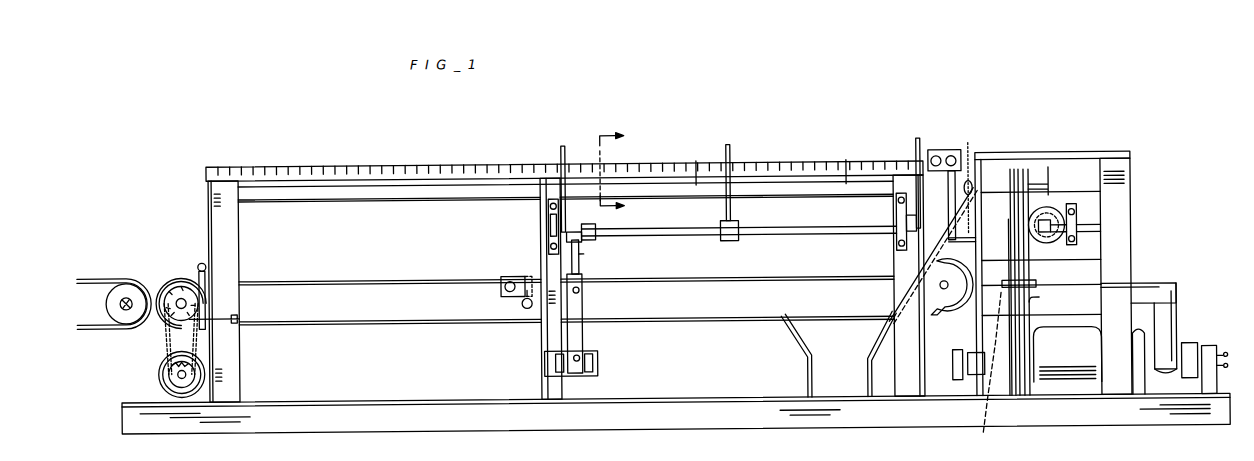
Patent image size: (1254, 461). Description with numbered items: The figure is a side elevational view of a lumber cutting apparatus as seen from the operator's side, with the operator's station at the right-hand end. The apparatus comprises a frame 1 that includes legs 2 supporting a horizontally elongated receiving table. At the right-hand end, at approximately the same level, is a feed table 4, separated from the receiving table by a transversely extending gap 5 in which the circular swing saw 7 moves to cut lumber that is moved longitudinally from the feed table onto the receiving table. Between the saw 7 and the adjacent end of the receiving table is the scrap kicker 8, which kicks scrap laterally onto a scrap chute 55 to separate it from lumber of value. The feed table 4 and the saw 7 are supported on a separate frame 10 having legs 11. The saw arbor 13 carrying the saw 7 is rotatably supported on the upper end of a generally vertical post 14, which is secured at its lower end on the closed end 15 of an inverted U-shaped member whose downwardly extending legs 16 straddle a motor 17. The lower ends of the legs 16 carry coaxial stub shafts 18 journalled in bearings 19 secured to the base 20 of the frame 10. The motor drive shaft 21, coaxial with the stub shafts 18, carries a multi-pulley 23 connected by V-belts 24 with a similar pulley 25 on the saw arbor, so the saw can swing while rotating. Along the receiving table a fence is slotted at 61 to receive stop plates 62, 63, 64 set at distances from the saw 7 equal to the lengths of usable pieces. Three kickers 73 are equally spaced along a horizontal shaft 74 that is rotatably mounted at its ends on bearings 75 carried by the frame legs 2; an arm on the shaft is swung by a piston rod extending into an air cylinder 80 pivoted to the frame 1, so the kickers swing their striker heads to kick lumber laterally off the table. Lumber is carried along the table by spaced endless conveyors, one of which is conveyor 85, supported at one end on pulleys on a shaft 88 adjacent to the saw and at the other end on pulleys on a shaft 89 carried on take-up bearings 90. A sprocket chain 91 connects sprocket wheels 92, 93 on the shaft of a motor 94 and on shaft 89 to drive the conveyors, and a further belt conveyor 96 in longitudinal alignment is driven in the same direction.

The frame 1 is at (252, 355).
The legs 2 is at (242, 261).
The feed table 4 is at (1092, 160).
The gap 5 is at (986, 150).
The circular swing saw 7 is at (970, 165).
The scrap kicker 8 is at (950, 150).
The frame 10 is at (1136, 208).
The legs 11 is at (1130, 242).
The saw arbor 13 is at (1042, 189).
The post 14 is at (1028, 292).
The closed end 15 is at (1146, 292).
The legs 16 is at (1176, 302).
The motor 17 is at (1060, 367).
The stub shafts 18 is at (1190, 352).
The bearings 19 is at (1207, 358).
The base 20 is at (1120, 427).
The motor drive shaft 21 is at (989, 441).
The multi-pulley 23 is at (1021, 403).
The V-belts 24 is at (1033, 327).
The pulley 25 is at (1020, 179).
The scrap chute 55 is at (886, 339).
The slots 61 is at (422, 168).
The stop plate 62 is at (848, 164).
The stop plate 63 is at (698, 165).
The stop plate 64 is at (602, 158).
The kickers 73 is at (563, 152).
The shaft 74 is at (770, 244).
The bearings 75 is at (550, 226).
The air cylinder 80 is at (583, 342).
The endless conveyor 85 is at (400, 282).
The shaft 88 is at (940, 303).
The shaft 89 is at (181, 289).
The take-up bearings 90 is at (202, 264).
The sprocket chain 91 is at (162, 337).
The sprocket wheel 92 is at (168, 369).
The sprocket wheel 93 is at (168, 285).
The motor 94 is at (161, 381).
The belt conveyor 96 is at (110, 280).